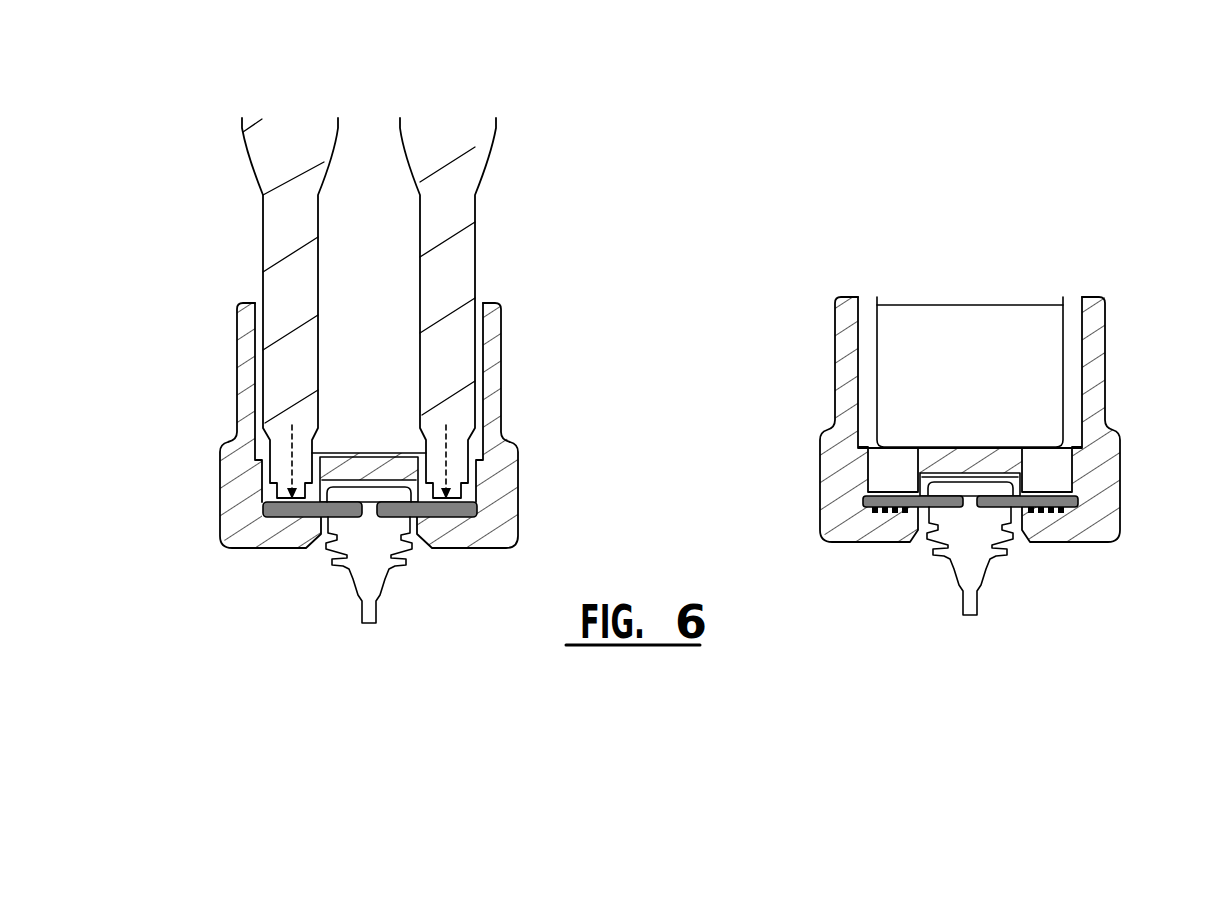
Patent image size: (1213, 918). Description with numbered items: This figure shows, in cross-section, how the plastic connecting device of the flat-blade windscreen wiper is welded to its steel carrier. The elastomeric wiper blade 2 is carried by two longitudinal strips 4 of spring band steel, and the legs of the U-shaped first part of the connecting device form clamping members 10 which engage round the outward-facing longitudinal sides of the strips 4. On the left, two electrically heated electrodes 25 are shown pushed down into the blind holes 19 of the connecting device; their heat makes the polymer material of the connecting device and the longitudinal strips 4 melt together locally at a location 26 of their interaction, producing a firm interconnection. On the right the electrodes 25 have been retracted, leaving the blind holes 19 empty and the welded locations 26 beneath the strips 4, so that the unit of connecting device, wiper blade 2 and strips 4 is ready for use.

The wiper blade 2 is at (373, 597).
The longitudinal strips 4 is at (472, 514).
The clamping members 10 is at (236, 533).
The blind holes 19 is at (262, 500).
The electrically heated electrodes 25 is at (471, 222).
The location of interaction 26 is at (1038, 526).